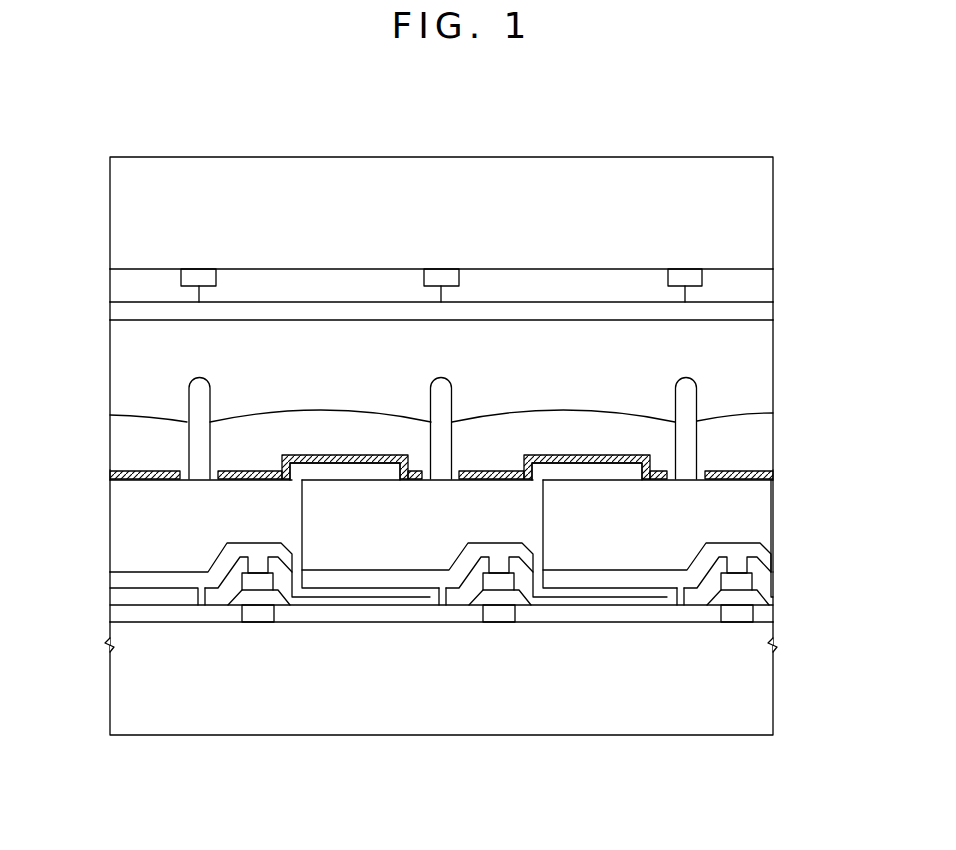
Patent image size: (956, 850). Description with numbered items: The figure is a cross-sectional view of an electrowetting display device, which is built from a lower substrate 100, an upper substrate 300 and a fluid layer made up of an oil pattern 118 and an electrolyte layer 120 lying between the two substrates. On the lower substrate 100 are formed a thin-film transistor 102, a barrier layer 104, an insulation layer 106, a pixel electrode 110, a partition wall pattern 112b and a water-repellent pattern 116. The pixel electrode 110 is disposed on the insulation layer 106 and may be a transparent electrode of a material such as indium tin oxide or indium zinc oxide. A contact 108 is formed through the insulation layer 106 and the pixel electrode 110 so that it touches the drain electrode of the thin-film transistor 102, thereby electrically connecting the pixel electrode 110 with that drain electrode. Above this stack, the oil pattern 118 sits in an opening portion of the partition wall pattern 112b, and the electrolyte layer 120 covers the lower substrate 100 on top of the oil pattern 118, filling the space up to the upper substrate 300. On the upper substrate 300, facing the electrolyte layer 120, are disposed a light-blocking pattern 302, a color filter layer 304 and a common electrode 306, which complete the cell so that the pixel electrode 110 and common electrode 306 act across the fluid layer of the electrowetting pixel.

The lower substrate 100 is at (770, 677).
The thin-film transistor 102 is at (255, 624).
The barrier layer 104 is at (770, 561).
The insulation layer 106 is at (770, 518).
The contact 108 is at (295, 514).
The pixel electrode 110 is at (620, 473).
The partition wall pattern 112b is at (188, 396).
The water-repellent pattern 116 is at (120, 471).
The oil pattern 118 is at (770, 430).
The electrolyte layer 120 is at (770, 355).
The upper substrate 300 is at (770, 207).
The light-blocking pattern 302 is at (698, 269).
The color filter layer 304 is at (770, 287).
The common electrode 306 is at (770, 312).